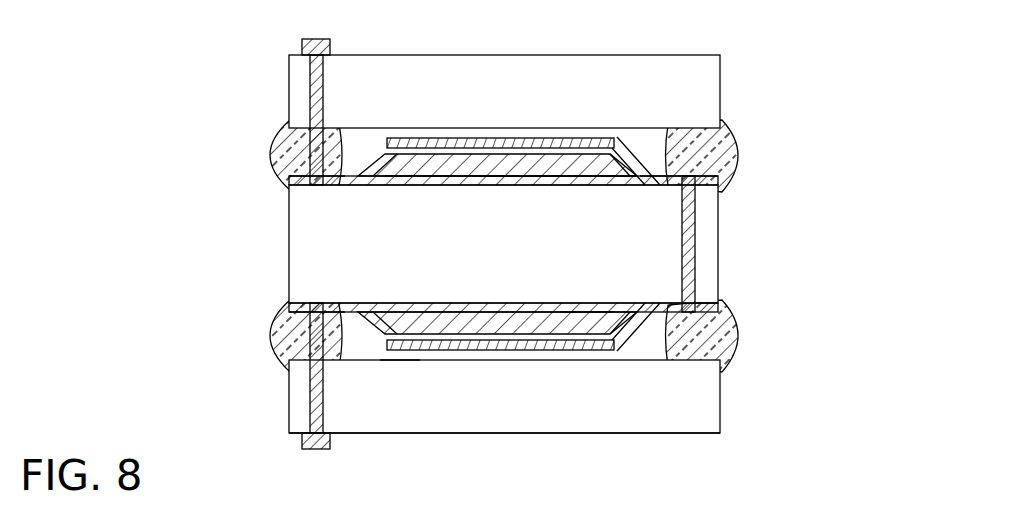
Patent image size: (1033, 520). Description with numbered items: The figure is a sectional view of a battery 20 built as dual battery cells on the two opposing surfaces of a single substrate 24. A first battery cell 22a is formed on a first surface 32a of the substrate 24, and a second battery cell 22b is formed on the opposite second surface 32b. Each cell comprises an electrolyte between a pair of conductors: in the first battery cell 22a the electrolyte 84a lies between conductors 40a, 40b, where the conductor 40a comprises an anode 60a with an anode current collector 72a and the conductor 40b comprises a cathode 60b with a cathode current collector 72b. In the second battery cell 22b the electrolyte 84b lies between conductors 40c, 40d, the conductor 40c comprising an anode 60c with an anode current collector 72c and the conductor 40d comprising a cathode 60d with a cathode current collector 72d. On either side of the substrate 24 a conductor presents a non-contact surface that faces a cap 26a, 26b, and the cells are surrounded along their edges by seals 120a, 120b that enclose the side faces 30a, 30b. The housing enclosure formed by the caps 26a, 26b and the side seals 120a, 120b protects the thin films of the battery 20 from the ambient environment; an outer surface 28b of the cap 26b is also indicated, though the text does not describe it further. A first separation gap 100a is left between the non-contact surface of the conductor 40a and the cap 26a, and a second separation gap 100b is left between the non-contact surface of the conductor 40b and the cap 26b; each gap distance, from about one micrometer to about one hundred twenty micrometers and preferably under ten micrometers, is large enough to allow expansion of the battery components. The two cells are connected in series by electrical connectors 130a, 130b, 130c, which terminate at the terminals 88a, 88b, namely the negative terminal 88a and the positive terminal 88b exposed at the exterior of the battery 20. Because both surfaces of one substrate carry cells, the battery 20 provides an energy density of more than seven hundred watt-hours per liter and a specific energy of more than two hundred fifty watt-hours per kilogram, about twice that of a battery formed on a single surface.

The battery 20 is at (160, 48).
The first battery cell 22a is at (627, 152).
The second battery cell 22b is at (647, 350).
The substrate 24 is at (512, 254).
The cap 26a is at (530, 106).
The cap 26b is at (532, 404).
The outer surface of plate 28b is at (600, 434).
The side face 30a is at (268, 160).
The side face 30b is at (268, 322).
The first surface 32a is at (340, 186).
The second surface 32b is at (322, 304).
The conductor 40a is at (668, 160).
The conductor 40b is at (412, 168).
The conductor 40c is at (640, 300).
The conductor 40d is at (395, 320).
The anode 60a is at (600, 138).
The cathode 60b is at (615, 175).
The anode 60c is at (545, 352).
The cathode 60d is at (598, 313).
The anode current collector 72a is at (735, 171).
The cathode current collector 72b is at (445, 186).
The anode current collector 72c is at (703, 300).
The cathode current collector 72d is at (548, 308).
The electrolyte 84a is at (460, 150).
The electrolyte 84b is at (432, 325).
The negative terminal 88a is at (318, 39).
The positive terminal 88b is at (312, 450).
The first separation gap 100a is at (520, 178).
The second separation gap 100b is at (400, 360).
The seal 120a is at (733, 138).
The seal 120b is at (738, 314).
The electrical connector 130a is at (315, 105).
The electrical connector 130b is at (697, 222).
The electrical connector 130c is at (312, 395).